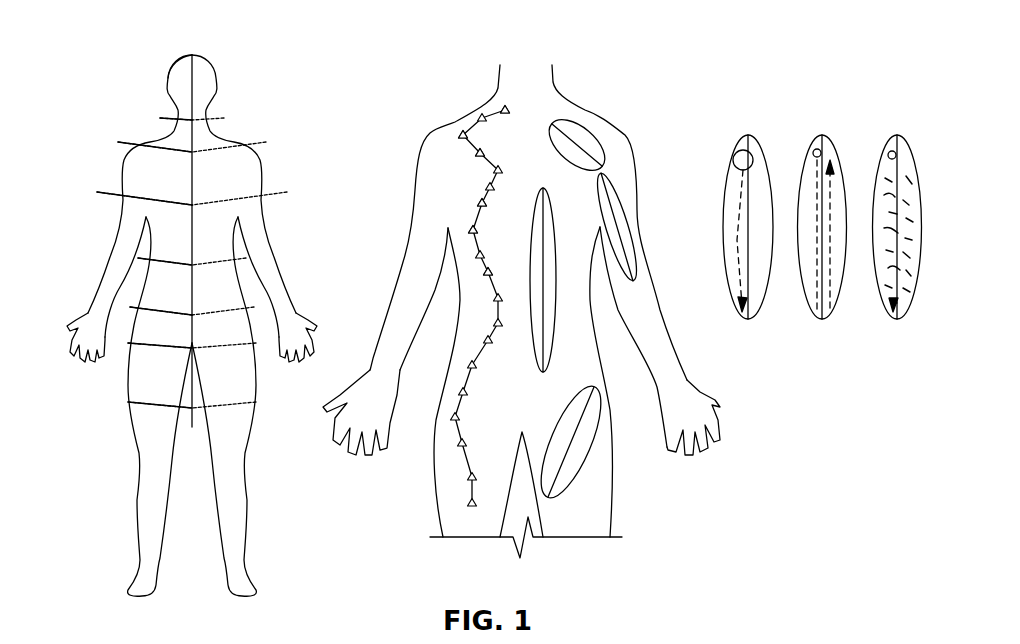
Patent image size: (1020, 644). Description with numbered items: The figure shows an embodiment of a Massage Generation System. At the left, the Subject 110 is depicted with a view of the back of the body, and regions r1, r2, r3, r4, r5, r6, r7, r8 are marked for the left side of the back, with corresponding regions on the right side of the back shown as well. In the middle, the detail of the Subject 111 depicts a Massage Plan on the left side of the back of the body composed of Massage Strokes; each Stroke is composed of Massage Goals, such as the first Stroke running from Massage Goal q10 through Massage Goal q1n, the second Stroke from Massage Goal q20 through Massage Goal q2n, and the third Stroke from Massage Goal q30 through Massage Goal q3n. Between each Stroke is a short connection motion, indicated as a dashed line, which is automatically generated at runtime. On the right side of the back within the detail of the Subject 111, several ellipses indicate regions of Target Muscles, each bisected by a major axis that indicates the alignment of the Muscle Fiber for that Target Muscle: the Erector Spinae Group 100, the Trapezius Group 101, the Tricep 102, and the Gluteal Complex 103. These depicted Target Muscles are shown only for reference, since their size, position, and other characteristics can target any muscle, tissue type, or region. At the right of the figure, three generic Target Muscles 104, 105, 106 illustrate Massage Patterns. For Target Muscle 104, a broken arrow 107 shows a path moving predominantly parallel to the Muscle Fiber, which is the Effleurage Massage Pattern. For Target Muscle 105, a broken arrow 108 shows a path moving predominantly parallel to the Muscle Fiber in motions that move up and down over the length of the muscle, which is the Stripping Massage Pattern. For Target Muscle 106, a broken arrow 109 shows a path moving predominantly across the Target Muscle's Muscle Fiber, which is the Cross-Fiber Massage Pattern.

The Subject 110 is at (214, 42).
The region r1 is at (168, 78).
The region r2 is at (175, 133).
The region r3 is at (128, 173).
The region r4 is at (160, 230).
The region r5 is at (158, 287).
The region r6 is at (143, 322).
The region r7 is at (128, 385).
The region r8 is at (127, 477).
The detail of the Subject 111 is at (548, 588).
The first Massage Goal of Massage Stroke q1 q10 is at (503, 107).
The last Massage Goal of Massage Stroke q1 q1n is at (461, 133).
The first Massage Goal of Massage Stroke q2 q20 is at (478, 152).
The last Massage Goal of Massage Stroke q2 q2n is at (480, 203).
The first Massage Goal of Massage Stroke q3 q30 is at (471, 230).
The last Massage Goal of Massage Stroke q3 q3n is at (485, 272).
The Erector Spinae Group 100 is at (530, 317).
The Trapezius Group 101 is at (588, 128).
The Tricep 102 is at (627, 237).
The Gluteal Complex 103 is at (583, 443).
The Target Muscle 104 is at (770, 365).
The Target Muscle 105 is at (845, 365).
The Target Muscle 106 is at (920, 365).
The broken arrow 107 is at (738, 152).
The broken arrow 108 is at (814, 150).
The broken arrow 109 is at (889, 152).